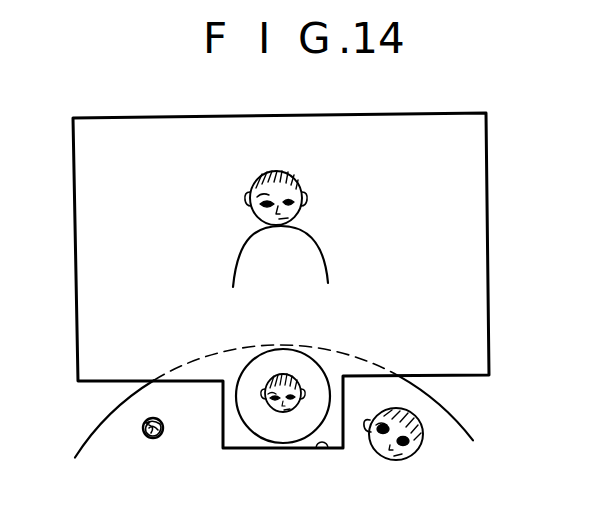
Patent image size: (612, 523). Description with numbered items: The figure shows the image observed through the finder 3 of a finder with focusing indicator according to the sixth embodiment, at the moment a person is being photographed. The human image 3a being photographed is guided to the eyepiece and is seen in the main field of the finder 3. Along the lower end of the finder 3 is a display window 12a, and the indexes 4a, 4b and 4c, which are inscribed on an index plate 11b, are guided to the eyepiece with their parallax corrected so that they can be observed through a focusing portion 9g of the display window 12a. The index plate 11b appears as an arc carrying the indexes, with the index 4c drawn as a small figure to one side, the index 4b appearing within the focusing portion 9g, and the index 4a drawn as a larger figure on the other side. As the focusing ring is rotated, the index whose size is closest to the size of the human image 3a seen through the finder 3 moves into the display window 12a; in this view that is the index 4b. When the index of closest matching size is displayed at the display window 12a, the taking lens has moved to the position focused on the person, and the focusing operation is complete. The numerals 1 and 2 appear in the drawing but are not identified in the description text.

The user 1 is at (378, 468).
The camera 2 is at (282, 431).
The finder 3 is at (161, 443).
The human image 3a is at (486, 182).
The index 4a is at (427, 422).
The index 4b is at (300, 375).
The index 4c is at (148, 412).
The focusing portion 9g is at (247, 432).
The index plate 11b is at (107, 450).
The display window 12a is at (322, 453).